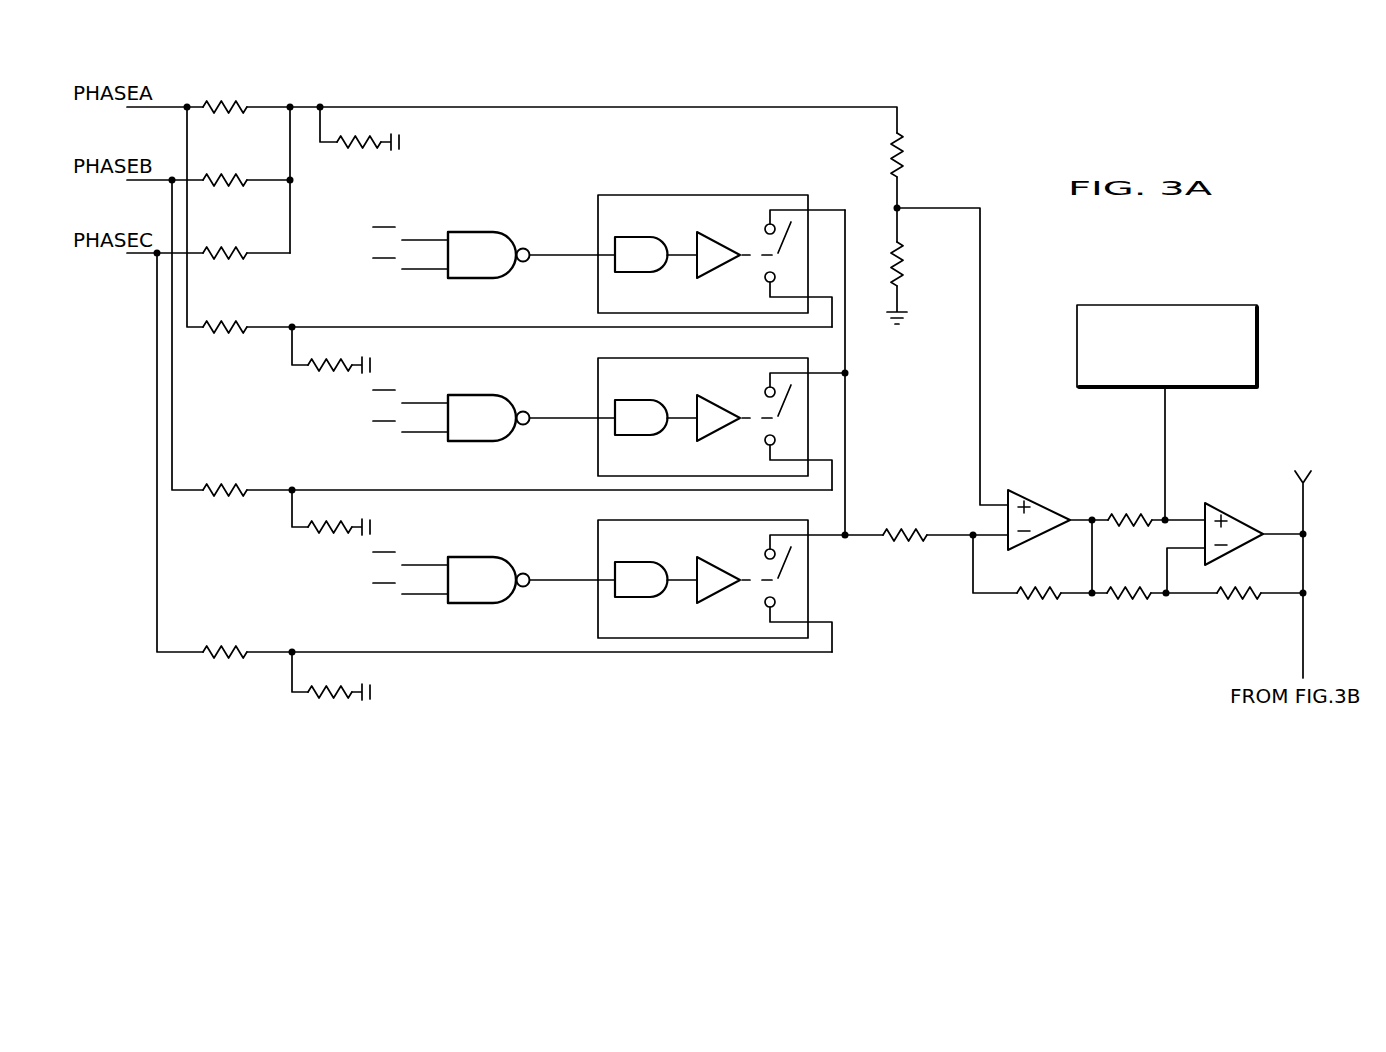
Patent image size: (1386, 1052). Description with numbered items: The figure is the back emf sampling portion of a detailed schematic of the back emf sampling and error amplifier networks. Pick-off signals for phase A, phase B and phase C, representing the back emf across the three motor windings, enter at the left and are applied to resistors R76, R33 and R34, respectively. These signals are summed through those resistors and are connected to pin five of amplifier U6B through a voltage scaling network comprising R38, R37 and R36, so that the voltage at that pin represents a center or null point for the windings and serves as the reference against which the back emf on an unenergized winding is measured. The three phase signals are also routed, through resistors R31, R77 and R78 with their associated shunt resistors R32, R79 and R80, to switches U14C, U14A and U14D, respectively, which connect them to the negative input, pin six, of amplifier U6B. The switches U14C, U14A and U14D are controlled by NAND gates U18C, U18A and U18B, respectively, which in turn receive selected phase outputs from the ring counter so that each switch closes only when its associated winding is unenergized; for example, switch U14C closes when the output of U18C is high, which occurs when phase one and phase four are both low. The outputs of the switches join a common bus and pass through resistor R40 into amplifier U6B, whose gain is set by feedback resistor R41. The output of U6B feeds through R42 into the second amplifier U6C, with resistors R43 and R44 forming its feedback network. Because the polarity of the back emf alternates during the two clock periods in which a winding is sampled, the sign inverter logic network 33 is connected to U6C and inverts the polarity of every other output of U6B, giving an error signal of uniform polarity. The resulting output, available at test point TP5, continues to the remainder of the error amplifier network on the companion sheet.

The sign inverter logic network 33 is at (1133, 303).
The resistor R76 is at (243, 107).
The resistor R33 is at (243, 180).
The resistor R34 is at (243, 253).
The resistor R31 1.00K R31 is at (235, 327).
The resistor R36 is at (368, 144).
The resistor R32 1.00K R32 is at (331, 378).
The resistor R77 1.00K R77 is at (235, 490).
The resistor R79 1.00K R79 is at (331, 540).
The resistor R78 1.00K R78 is at (235, 653).
The resistor R80 1.00K R80 is at (382, 679).
The resistor R37 is at (930, 159).
The resistor R38 is at (930, 270).
The resistor R40 10.0K R40 is at (907, 545).
The resistor R41 10.0K R41 is at (1039, 605).
The resistor R42 10.0K R42 is at (1127, 483).
The resistor R43 10.0K R43 is at (1129, 605).
The resistor R44 10.0K R44 is at (1239, 605).
The NAND gate U18C is at (485, 256).
The NAND gate U18A is at (485, 419).
The NAND gate U18B is at (485, 581).
The switch U14C is at (710, 255).
The switch U14A is at (710, 418).
The switch U14D is at (707, 580).
The amplifier U6B is at (1032, 495).
The amplifier U6C is at (1228, 510).
The test point TP5 is at (1303, 490).